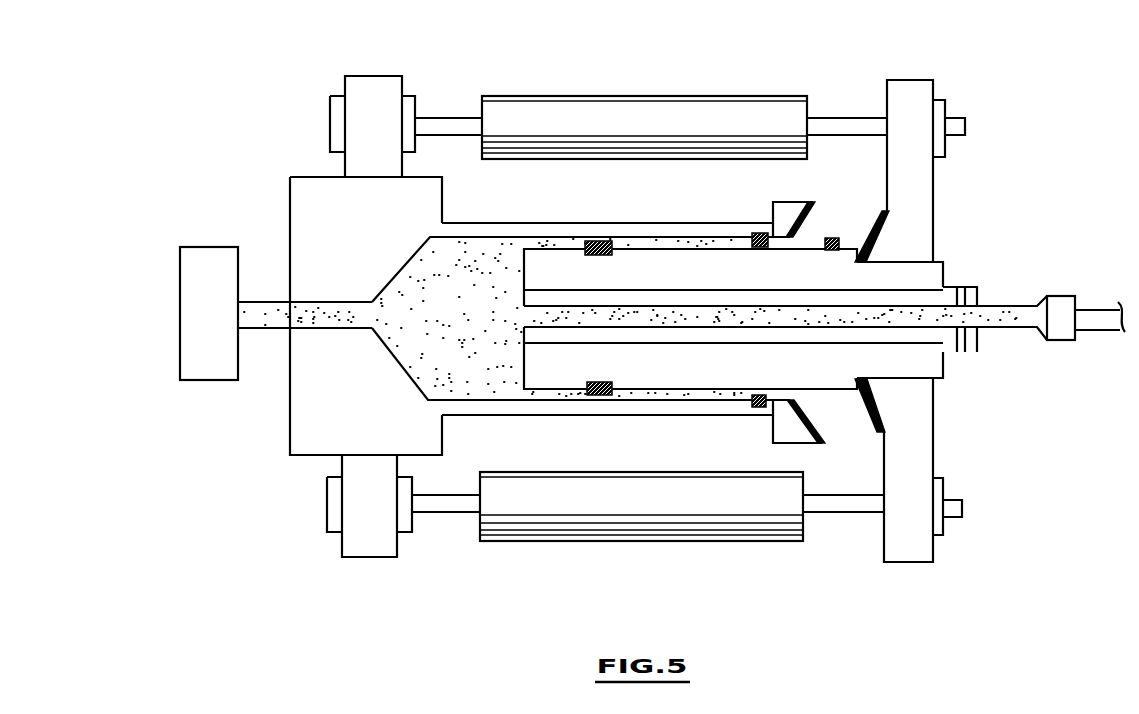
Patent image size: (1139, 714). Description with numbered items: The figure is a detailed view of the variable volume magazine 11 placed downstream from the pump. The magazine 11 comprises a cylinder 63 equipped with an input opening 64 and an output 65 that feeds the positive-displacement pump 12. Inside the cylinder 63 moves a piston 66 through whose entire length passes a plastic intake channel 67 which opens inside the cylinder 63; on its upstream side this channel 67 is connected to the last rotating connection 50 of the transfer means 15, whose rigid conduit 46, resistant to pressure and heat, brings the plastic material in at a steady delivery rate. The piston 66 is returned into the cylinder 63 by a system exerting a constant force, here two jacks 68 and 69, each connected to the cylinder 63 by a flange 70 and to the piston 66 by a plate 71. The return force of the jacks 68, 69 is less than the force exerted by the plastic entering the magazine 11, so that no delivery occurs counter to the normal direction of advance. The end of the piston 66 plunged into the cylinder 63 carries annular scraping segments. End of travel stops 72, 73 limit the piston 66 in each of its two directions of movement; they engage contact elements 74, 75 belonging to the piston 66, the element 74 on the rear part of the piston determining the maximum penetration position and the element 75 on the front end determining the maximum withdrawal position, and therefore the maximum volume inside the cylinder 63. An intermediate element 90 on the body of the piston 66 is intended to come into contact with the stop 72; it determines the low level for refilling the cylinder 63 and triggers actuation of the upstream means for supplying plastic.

The variable volume magazine 11 is at (428, 575).
The positive-displacement pump 12 is at (208, 260).
The transfer means 15 is at (1092, 379).
The rigid conduit 46 is at (1107, 320).
The rotating connection 50 is at (1060, 332).
The cylinder 63 is at (490, 230).
The input opening 64 is at (785, 246).
The output 65 is at (317, 320).
The piston 66 is at (654, 265).
The plastic intake channel 67 is at (733, 313).
The jack 68 is at (675, 118).
The jack 69 is at (680, 513).
The flange 70 is at (360, 542).
The plate 71 is at (930, 448).
The end of travel stop 72 is at (812, 420).
The end of travel stop 73 is at (758, 407).
The contact element 74 is at (878, 425).
The contact element 75 is at (597, 395).
The intermediate element 90 is at (840, 238).